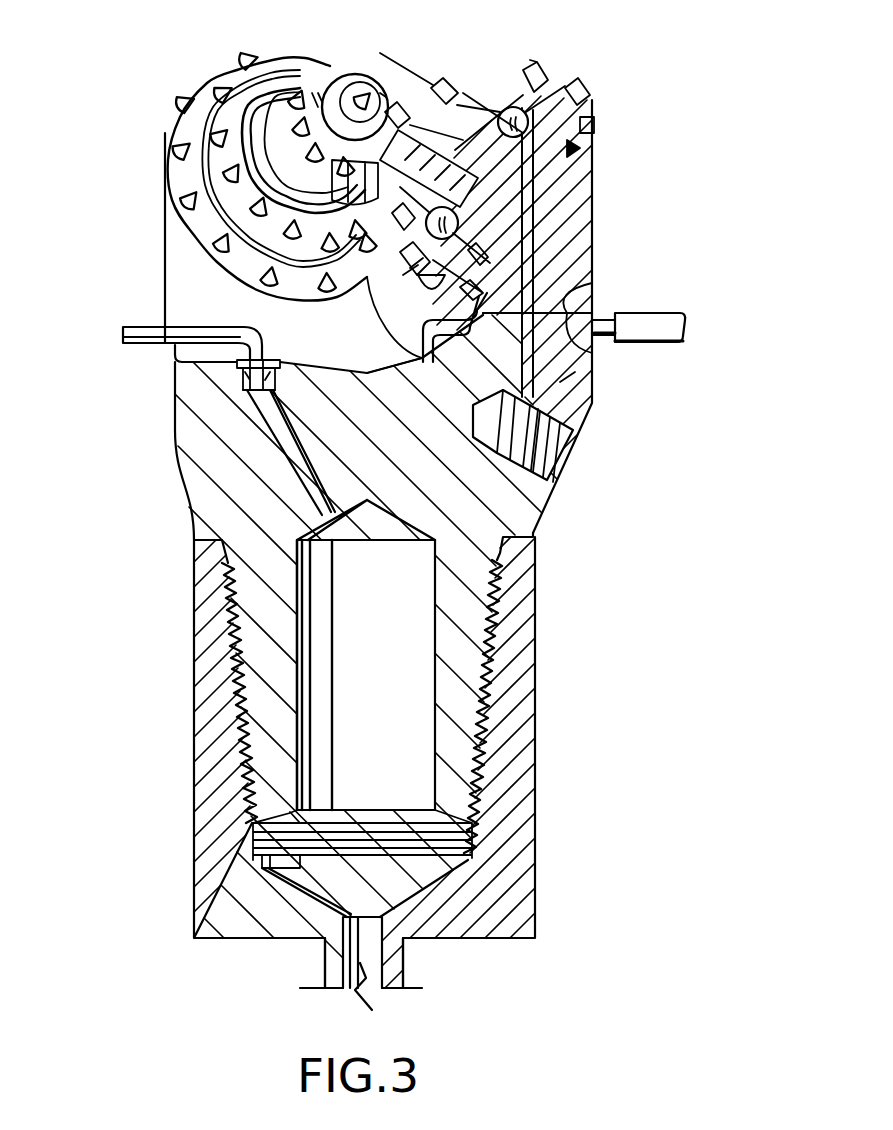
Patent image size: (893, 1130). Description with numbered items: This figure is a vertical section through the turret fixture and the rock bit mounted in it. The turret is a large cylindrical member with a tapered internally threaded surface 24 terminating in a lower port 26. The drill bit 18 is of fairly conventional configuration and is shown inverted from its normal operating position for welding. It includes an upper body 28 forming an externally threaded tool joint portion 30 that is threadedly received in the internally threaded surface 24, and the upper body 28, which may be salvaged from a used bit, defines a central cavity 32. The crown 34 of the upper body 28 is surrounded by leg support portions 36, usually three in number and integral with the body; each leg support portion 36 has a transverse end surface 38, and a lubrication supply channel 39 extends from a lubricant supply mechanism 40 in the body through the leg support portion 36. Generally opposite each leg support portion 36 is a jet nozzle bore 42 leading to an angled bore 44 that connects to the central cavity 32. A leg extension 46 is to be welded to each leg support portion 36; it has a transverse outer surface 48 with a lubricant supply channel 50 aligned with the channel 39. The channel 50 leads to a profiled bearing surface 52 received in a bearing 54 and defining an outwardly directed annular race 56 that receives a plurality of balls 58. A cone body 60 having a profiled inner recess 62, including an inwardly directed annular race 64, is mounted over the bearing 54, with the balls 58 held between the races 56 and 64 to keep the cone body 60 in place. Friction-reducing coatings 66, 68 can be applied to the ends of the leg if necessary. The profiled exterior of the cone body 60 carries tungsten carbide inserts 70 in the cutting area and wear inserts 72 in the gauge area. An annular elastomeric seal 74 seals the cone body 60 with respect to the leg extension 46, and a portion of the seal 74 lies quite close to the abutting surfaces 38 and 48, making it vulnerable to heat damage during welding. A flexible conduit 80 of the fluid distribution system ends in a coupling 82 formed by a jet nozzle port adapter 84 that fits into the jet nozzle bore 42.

The drill bit 18 is at (173, 380).
The tapered internally threaded surface 24 is at (243, 702).
The lower port 26 is at (360, 923).
The upper body 28 is at (197, 447).
The externally threaded tool joint portion 30 is at (470, 618).
The central cavity 32 is at (390, 660).
The crown 34 is at (353, 370).
The leg support portion 36 is at (538, 388).
The transverse end surface 38 is at (592, 283).
The lubrication supply channel 39 is at (570, 382).
The lubricant supply mechanism 40 is at (571, 437).
The jet nozzle bore 42 is at (277, 360).
The angled bore 44 is at (320, 510).
The leg extension 46 is at (594, 222).
The transverse outer surface 48 is at (594, 352).
The lubricant supply channel 50 is at (534, 253).
The profiled bearing surface 52 is at (555, 165).
The bearing 54 is at (594, 133).
The outwardly directed annular race 56 is at (448, 82).
The balls 58 is at (458, 140).
The cone body 60 is at (410, 83).
The profiled inner recess 62 is at (432, 98).
The inwardly directed annular race 64 is at (513, 107).
The friction-reducing coating 66 is at (489, 137).
The friction-reducing coating 68 is at (441, 239).
The tungsten carbide inserts 70 is at (187, 98).
The wear inserts 72 is at (594, 123).
The annular elastomeric seal 74 is at (570, 148).
The flexible conduit 80 is at (673, 328).
The coupling 82 is at (252, 342).
The jet nozzle port adapter 84 is at (243, 378).